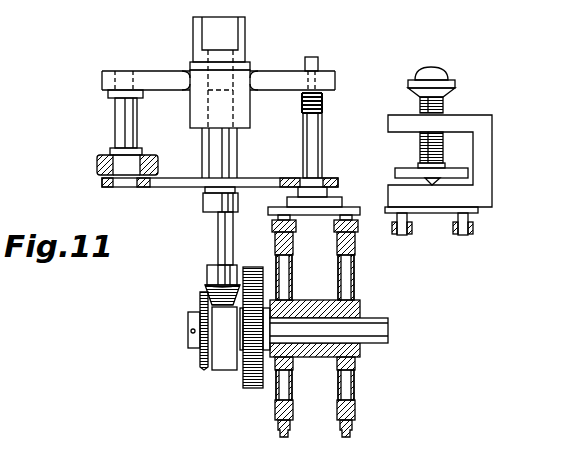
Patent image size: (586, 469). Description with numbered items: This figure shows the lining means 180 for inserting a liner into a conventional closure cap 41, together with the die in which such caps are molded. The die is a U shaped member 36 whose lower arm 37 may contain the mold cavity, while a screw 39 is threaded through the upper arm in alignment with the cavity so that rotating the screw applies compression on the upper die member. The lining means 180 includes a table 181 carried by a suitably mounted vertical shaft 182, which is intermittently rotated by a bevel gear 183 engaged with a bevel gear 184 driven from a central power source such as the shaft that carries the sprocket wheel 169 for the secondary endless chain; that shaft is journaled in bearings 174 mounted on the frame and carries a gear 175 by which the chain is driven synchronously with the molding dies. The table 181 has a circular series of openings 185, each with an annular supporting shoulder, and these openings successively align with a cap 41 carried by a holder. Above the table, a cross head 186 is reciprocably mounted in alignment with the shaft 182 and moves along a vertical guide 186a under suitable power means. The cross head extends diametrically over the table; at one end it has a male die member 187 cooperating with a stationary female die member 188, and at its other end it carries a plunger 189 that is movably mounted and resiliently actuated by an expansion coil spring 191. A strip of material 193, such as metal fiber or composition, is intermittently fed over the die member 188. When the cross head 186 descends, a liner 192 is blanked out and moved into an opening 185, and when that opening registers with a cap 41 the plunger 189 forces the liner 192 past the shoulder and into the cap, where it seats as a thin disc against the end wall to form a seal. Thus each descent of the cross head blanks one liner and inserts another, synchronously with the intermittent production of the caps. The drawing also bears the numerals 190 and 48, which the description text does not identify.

The cross head 186 is at (200, 82).
The vertical guide 186a is at (248, 44).
The pin 190 is at (318, 62).
The expansion coil spring 191 is at (322, 105).
The plunger 189 is at (323, 135).
The liner 192 is at (325, 180).
The openings 185 is at (302, 180).
The closure cap 41 is at (330, 195).
The male die member 187 is at (115, 115).
The strip of material 193 is at (118, 152).
The stationary female die member 188 is at (97, 163).
The table 181 is at (185, 185).
The vertical shaft 182 is at (218, 243).
The lining means 180 is at (168, 333).
The bevel gear 183 is at (207, 283).
The bevel gear 184 is at (198, 352).
The bearings 174 is at (222, 360).
The gear 175 is at (250, 388).
The sprocket wheel 169 is at (345, 410).
The knob 48 is at (440, 78).
The screw 39 is at (443, 107).
The U shaped member 36 is at (487, 155).
The lower arm 37 is at (465, 197).